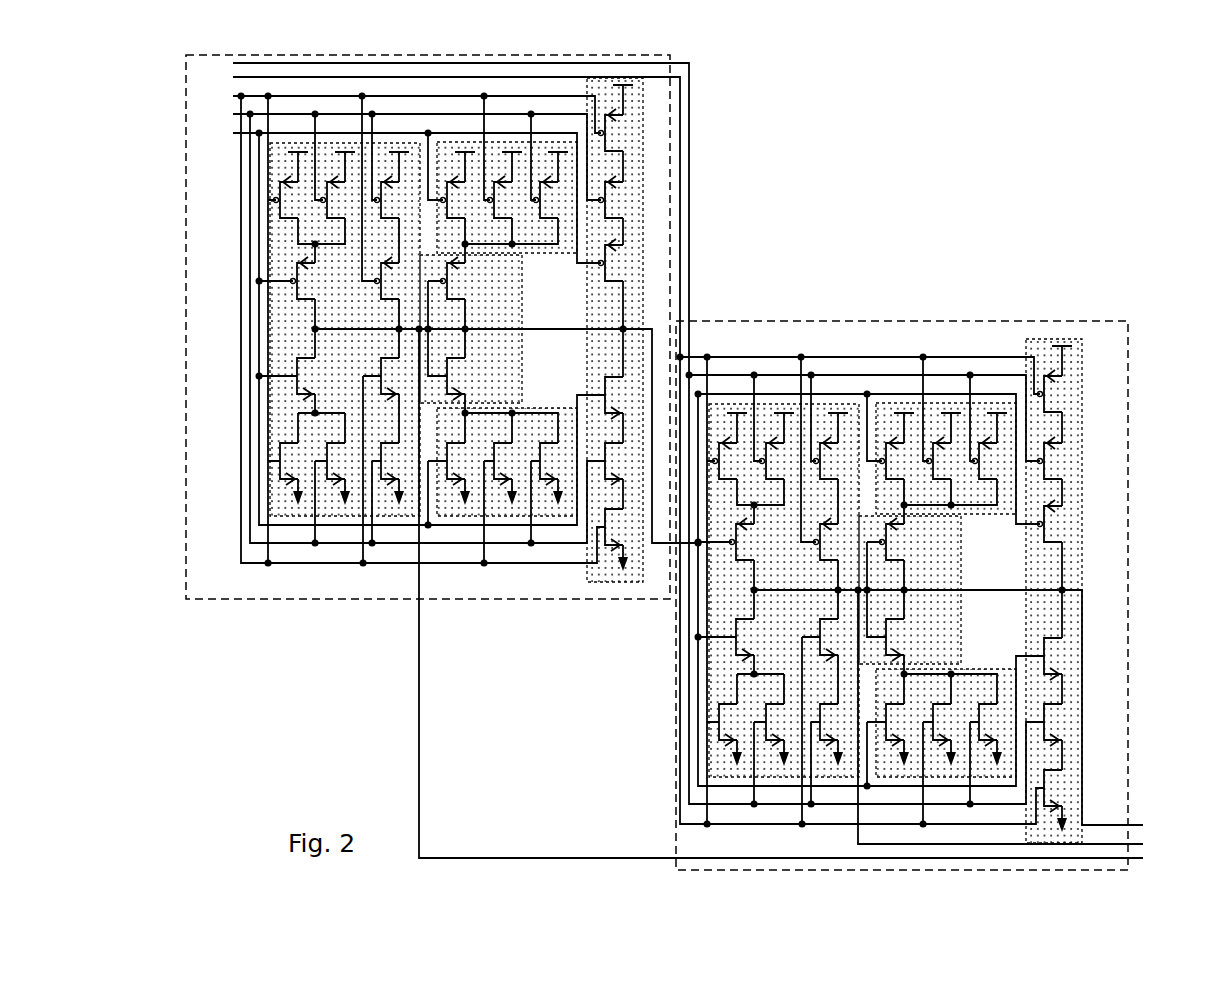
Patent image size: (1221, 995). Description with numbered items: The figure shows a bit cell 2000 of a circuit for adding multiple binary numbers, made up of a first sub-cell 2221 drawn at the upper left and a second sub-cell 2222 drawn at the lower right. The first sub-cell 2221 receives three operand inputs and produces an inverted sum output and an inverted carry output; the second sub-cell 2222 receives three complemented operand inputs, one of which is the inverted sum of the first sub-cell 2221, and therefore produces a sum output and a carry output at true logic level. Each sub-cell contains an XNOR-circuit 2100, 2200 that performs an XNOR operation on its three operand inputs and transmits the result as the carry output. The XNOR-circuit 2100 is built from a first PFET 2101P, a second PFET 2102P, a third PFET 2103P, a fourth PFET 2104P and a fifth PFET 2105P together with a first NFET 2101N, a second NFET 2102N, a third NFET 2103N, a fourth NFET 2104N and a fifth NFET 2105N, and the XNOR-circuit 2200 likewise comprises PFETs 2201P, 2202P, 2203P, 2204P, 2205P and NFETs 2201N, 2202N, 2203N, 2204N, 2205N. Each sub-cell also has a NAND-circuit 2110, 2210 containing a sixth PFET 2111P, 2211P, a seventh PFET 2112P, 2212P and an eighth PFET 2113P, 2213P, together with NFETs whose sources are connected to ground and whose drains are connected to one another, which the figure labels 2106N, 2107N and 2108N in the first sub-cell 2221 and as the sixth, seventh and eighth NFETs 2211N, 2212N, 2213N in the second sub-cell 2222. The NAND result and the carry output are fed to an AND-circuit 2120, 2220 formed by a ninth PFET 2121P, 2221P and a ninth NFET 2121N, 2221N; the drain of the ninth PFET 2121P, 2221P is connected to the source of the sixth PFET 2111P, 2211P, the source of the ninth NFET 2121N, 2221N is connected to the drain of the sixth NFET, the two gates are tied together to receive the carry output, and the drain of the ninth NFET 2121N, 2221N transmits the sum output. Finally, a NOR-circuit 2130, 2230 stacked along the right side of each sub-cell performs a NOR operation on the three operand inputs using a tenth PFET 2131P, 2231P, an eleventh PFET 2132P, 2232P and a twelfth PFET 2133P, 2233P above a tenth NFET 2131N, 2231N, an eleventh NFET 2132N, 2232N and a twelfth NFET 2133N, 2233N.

The bit cell 2000 is at (1031, 159).
The XNOR-circuit 2100 is at (298, 329).
The NAND-circuit 2110 is at (547, 243).
The AND-circuit 2120 is at (531, 428).
The NOR-circuit 2130 is at (638, 298).
The XNOR-circuit 2200 is at (743, 590).
The NAND-circuit 2210 is at (953, 485).
The AND-circuit 2220 is at (938, 597).
The NOR-circuit 2230 is at (1115, 591).
The first sub-cell 2221 is at (377, 582).
The second sub-cell 2222 is at (980, 327).
The first PFET 2101P is at (294, 185).
The second PFET 2102P is at (341, 185).
The third PFET 2103P is at (395, 185).
The fourth PFET 2104P is at (311, 278).
The fifth PFET 2105P is at (395, 278).
The sixth PFET 2111P is at (461, 185).
The seventh PFET 2112P is at (508, 185).
The eighth PFET 2113P is at (554, 185).
The ninth PFET 2121P is at (461, 278).
The tenth PFET 2131P is at (619, 118).
The eleventh PFET 2132P is at (619, 197).
The twelfth PFET 2133P is at (619, 260).
The first NFET 2101N is at (298, 474).
The second NFET 2102N is at (345, 474).
The third NFET 2103N is at (399, 474).
The fourth NFET 2104N is at (315, 379).
The fifth NFET 2105N is at (399, 379).
The NMOS transistor 2106N is at (465, 474).
The NMOS transistor 2107N is at (512, 474).
The NMOS transistor 2108N is at (558, 474).
The ninth NFET 2121N is at (465, 379).
The tenth NFET 2131N is at (623, 540).
The eleventh NFET 2132N is at (623, 464).
The twelfth NFET 2133N is at (623, 398).
The first PFET 2201P is at (733, 446).
The second PFET 2202P is at (780, 446).
The third PFET 2203P is at (834, 446).
The fourth PFET 2204P is at (750, 539).
The fifth PFET 2205P is at (834, 539).
The sixth PFET 2211P is at (900, 446).
The seventh PFET 2212P is at (947, 446).
The eighth PFET 2213P is at (993, 446).
The ninth PFET 2221P is at (900, 539).
The tenth PFET 2231P is at (1058, 379).
The eleventh PFET 2232P is at (1058, 458).
The twelfth PFET 2233P is at (1058, 521).
The first NFET 2201N is at (737, 735).
The second NFET 2202N is at (784, 735).
The third NFET 2203N is at (838, 735).
The fourth NFET 2204N is at (754, 640).
The fifth NFET 2205N is at (838, 640).
The sixth NFET 2211N is at (904, 735).
The seventh NFET 2212N is at (951, 735).
The eighth NFET 2213N is at (997, 735).
The ninth NFET 2221N is at (904, 640).
The NMOS transistor 2231N is at (1062, 801).
The eleventh NFET 2232N is at (1062, 725).
The twelfth NFET 2233N is at (1062, 659).